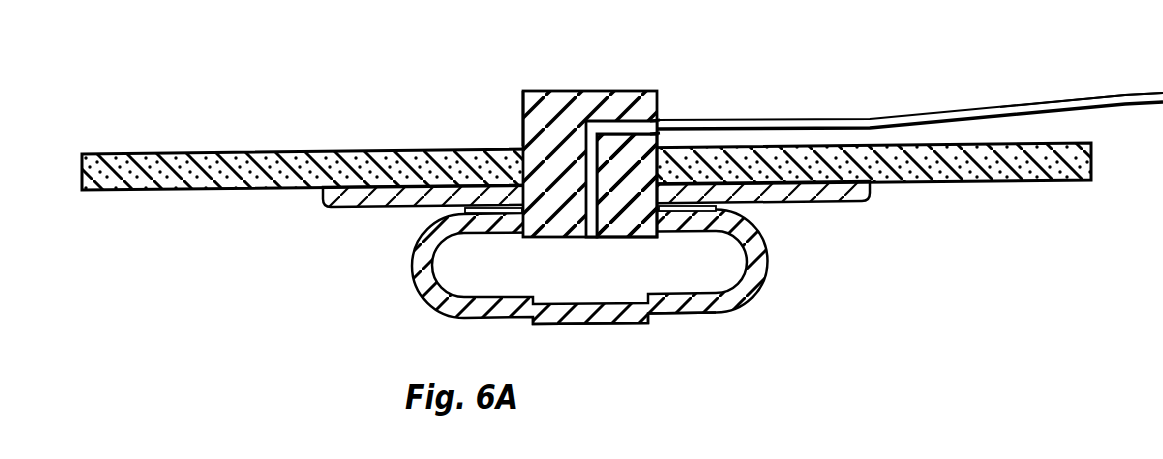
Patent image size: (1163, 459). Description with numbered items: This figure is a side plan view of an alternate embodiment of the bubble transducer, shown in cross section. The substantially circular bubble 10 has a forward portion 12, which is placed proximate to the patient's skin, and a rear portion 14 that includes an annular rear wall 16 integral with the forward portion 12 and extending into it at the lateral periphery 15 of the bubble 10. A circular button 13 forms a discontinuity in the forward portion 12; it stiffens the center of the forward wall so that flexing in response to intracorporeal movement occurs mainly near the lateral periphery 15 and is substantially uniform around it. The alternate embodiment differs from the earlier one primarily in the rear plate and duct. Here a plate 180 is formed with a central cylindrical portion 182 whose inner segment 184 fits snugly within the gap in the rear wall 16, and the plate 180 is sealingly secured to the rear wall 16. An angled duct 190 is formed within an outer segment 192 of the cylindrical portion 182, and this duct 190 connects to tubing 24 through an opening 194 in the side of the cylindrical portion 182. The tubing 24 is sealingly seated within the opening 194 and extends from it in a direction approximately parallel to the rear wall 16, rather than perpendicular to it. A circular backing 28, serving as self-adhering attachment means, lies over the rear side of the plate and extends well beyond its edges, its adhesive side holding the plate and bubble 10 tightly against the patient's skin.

The bubble 10 is at (559, 304).
The forward portion 12 is at (688, 317).
The button 13 is at (600, 321).
The rear portion 14 is at (408, 246).
The lateral periphery 15 is at (772, 258).
The rear wall 16 is at (490, 237).
The tubing 24 is at (1062, 101).
The backing 28 is at (1057, 142).
The plate 180 is at (826, 207).
The cylindrical portion 182 is at (545, 91).
The inner segment 184 is at (662, 237).
The angled duct 190 is at (576, 126).
The outer segment 192 is at (519, 144).
The opening 194 is at (657, 121).